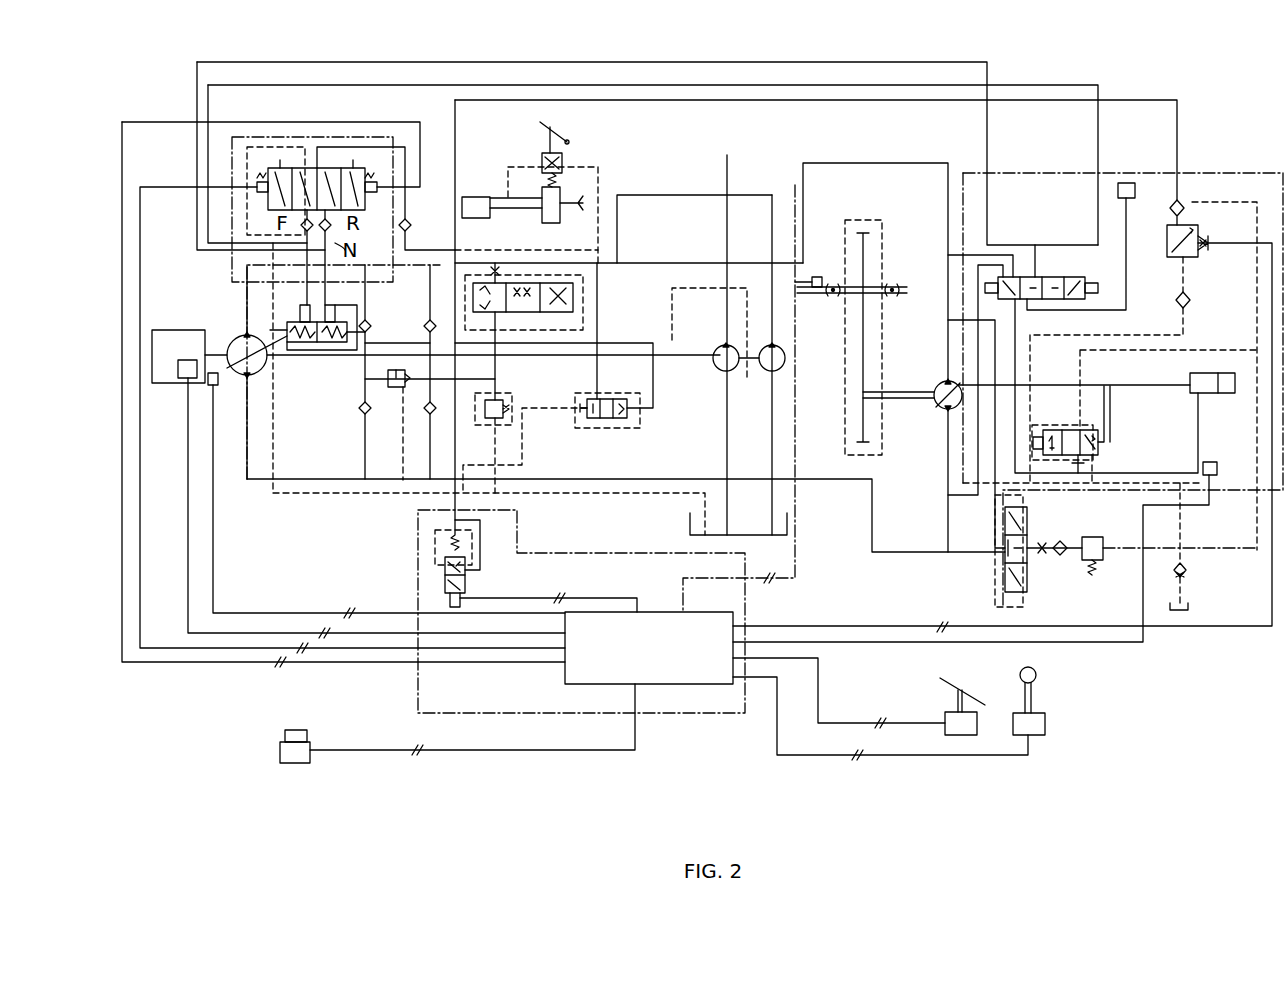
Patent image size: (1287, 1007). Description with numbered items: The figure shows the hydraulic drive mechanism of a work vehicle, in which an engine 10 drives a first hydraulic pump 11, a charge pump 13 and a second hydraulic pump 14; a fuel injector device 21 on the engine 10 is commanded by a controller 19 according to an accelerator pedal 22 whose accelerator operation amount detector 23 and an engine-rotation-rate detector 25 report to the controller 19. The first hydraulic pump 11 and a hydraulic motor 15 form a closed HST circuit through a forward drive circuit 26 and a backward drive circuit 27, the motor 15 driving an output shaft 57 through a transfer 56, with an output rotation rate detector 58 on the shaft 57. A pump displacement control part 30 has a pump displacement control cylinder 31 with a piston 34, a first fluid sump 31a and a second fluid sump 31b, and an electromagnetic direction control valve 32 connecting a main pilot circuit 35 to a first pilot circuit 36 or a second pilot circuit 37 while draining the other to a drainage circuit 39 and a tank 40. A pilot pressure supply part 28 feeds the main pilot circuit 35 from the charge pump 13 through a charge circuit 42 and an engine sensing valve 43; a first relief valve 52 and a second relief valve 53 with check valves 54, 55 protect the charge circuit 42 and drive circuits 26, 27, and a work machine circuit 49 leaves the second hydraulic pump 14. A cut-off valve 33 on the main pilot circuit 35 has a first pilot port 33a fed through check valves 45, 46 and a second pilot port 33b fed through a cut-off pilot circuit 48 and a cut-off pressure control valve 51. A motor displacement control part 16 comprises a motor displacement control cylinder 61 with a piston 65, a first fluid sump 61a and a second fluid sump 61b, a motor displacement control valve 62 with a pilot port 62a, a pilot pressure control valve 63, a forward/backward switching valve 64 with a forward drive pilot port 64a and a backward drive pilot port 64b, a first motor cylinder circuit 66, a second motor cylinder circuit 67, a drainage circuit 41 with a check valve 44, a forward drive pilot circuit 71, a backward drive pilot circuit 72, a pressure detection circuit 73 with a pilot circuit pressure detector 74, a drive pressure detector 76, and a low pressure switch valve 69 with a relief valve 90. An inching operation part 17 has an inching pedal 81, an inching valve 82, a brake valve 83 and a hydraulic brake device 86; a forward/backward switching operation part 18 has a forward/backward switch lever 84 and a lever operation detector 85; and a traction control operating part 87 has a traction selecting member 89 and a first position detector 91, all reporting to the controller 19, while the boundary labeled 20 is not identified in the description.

The engine 10 is at (170, 330).
The first hydraulic pump 11 is at (232, 340).
The charge pump 13 is at (768, 371).
The second hydraulic pump 14 is at (718, 347).
The hydraulic motor 15 is at (938, 384).
The motor displacement control part 16 is at (1235, 170).
The inching operation part 17 is at (575, 140).
The forward/backward switching operation part 18 is at (1066, 702).
The controller 19 is at (675, 685).
The control system 20 is at (418, 686).
The fuel injector device 21 is at (183, 378).
The accelerator pedal 22 is at (970, 700).
The accelerator operation amount detector 23 is at (945, 715).
The engine-rotation-rate detector 25 is at (216, 386).
The forward drive circuit 26 is at (250, 480).
The backward drive circuit 27 is at (247, 268).
The pilot pressure supply part 28 is at (793, 185).
The pump displacement control part 30 is at (232, 218).
The pump displacement control cylinder 31 is at (325, 343).
The first fluid sump 31a is at (340, 345).
The second fluid sump 31b is at (305, 345).
The electromagnetic direction control valve 32 is at (285, 168).
The cut-off valve 33 is at (640, 424).
The first pilot port 33a is at (620, 418).
The second pilot port 33b is at (587, 412).
The piston 34 is at (290, 343).
The main pilot circuit 35 is at (365, 147).
The first pilot circuit 36 is at (335, 296).
The second pilot circuit 37 is at (302, 296).
The drainage circuit 39 is at (333, 494).
The tank 40 is at (690, 524).
The drainage circuit 41 is at (1182, 524).
The charge circuit 42 is at (687, 195).
The engine sensing valve 43 is at (583, 298).
The check valve 44 is at (1187, 574).
The check valve 45 is at (368, 414).
The check valve 46 is at (372, 326).
The cut-off pilot circuit 48 is at (510, 425).
The work machine circuit 49 is at (725, 216).
The cut-off pressure control valve 51 is at (470, 580).
The first relief valve 52 is at (500, 400).
The second relief valve 53 is at (396, 388).
The check valve 54 is at (428, 414).
The check valve 55 is at (428, 320).
The transfer 56 is at (875, 220).
The output shaft 57 is at (820, 296).
The output rotation rate detector 58 is at (818, 277).
The motor displacement control cylinder 61 is at (1208, 393).
The first fluid sump 61a is at (1195, 373).
The second fluid sump 61b is at (1228, 393).
The motor displacement control valve 62 is at (1098, 448).
The pilot port 62a is at (1038, 437).
The pilot pressure control valve 63 is at (1190, 258).
The forward/backward switching valve 64 is at (1042, 277).
The forward drive pilot port 64a is at (1008, 282).
The backward drive pilot port 64b is at (1082, 282).
The piston 65 is at (1222, 350).
The first motor cylinder circuit 66 is at (1178, 473).
The second motor cylinder circuit 67 is at (1080, 362).
The low pressure switch valve 69 is at (1028, 575).
The forward drive pilot circuit 71 is at (988, 122).
The backward drive pilot circuit 72 is at (1097, 140).
The pressure detection circuit 73 is at (1127, 280).
The pilot circuit pressure detector 74 is at (1130, 183).
The drive pressure detector 76 is at (1217, 470).
The inching pedal 81 is at (545, 125).
The inching valve 82 is at (542, 158).
The brake valve 83 is at (562, 195).
The forward/backward switch lever 84 is at (1036, 680).
The lever operation detector 85 is at (1045, 728).
The hydraulic brake device 86 is at (480, 197).
The traction control operating part 87 is at (222, 742).
The traction selecting member 89 is at (285, 735).
The relief valve 90 is at (1096, 570).
The first position detector 91 is at (280, 755).